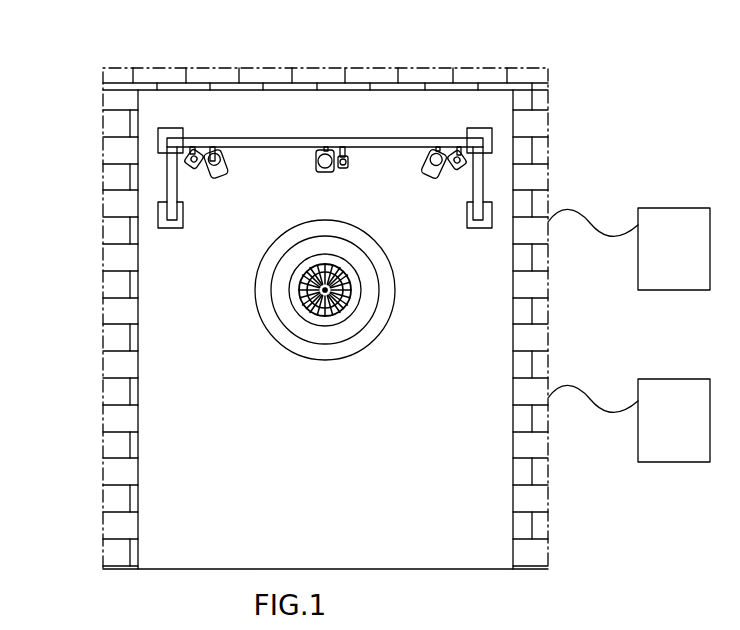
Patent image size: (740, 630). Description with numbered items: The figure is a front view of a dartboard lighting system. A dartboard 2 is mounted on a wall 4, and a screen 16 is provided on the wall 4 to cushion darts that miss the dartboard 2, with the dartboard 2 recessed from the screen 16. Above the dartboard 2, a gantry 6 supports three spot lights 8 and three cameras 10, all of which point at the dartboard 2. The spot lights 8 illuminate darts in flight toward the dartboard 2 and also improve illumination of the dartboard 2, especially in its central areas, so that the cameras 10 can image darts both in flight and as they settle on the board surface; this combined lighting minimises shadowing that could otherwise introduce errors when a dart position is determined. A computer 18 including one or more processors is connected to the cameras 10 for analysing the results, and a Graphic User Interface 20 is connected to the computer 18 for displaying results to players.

The dartboard 2 is at (318, 317).
The wall 4 is at (523, 180).
The gantry 6 is at (173, 176).
The spot lights 8 is at (220, 175).
The cameras 10 is at (460, 152).
The screen 16 is at (460, 102).
The computer 18 is at (662, 259).
The Graphic User Interface 20 is at (662, 430).